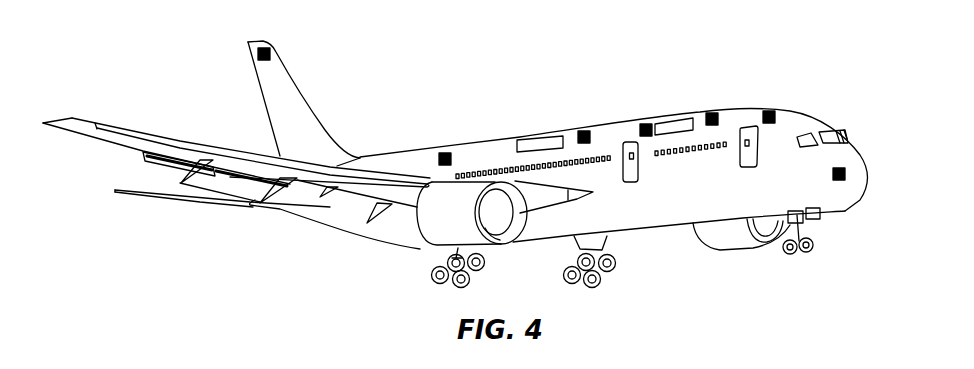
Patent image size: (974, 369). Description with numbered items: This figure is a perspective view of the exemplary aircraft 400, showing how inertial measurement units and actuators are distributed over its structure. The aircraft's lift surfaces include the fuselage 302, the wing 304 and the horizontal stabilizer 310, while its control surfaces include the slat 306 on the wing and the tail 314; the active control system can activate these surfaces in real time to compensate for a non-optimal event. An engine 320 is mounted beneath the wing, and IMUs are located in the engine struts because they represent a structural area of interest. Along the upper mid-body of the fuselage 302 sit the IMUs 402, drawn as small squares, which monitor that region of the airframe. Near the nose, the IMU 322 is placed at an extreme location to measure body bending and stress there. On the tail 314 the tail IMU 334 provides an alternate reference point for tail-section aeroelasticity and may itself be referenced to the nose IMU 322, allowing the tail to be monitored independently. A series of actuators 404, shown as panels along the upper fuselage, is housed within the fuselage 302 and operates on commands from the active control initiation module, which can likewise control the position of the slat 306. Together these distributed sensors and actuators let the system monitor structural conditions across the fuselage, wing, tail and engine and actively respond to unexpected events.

The aircraft 400 is at (870, 81).
The fuselage 302 is at (680, 205).
The wing 304 is at (85, 118).
The slat 306 is at (153, 135).
The horizontal stabilizer 310 is at (197, 203).
The tail 314 is at (295, 102).
The engine 320 is at (493, 180).
The IMU 322 is at (843, 182).
The tail IMU 334 is at (269, 47).
The IMUs 402 is at (447, 153).
The actuators 404 is at (542, 140).